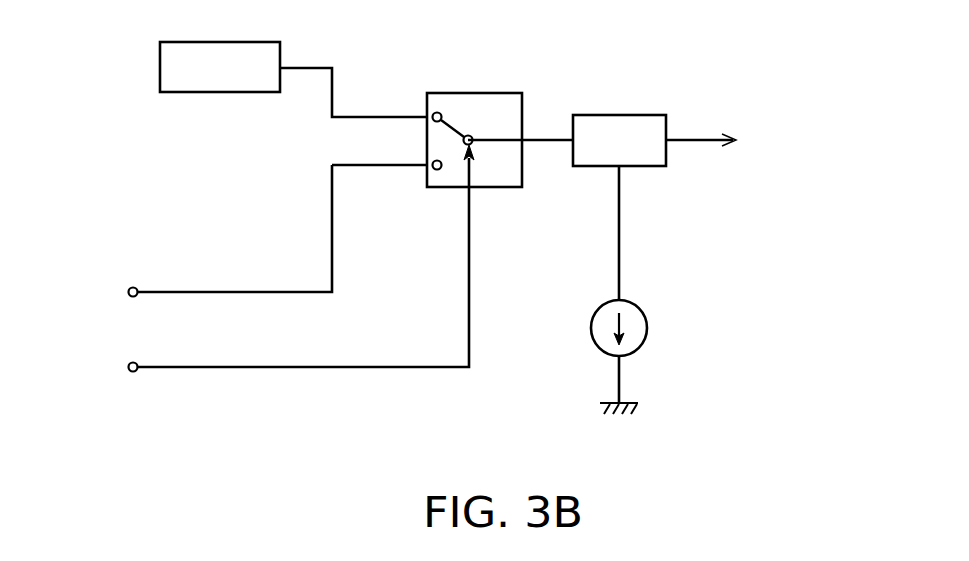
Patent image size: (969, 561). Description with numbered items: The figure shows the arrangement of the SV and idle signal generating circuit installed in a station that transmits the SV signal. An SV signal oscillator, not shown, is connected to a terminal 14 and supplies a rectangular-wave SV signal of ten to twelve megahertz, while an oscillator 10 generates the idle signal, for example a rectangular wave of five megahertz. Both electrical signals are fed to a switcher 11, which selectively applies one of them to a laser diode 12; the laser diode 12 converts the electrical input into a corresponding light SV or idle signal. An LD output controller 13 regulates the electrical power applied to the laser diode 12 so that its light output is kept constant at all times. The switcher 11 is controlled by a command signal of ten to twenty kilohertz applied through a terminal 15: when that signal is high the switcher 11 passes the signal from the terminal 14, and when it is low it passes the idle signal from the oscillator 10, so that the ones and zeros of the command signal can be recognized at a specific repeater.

The oscillator 10 is at (255, 42).
The switcher 11 is at (515, 93).
The laser diode 12 is at (650, 115).
The LD output controller 13 is at (731, 329).
The terminal 14 is at (128, 292).
The terminal 15 is at (128, 367).